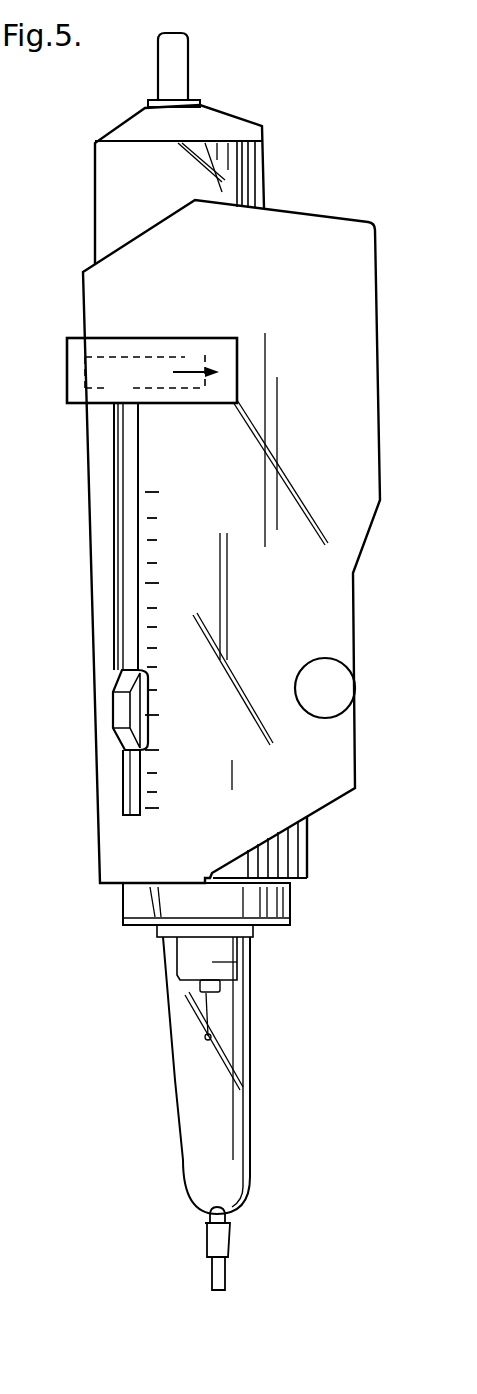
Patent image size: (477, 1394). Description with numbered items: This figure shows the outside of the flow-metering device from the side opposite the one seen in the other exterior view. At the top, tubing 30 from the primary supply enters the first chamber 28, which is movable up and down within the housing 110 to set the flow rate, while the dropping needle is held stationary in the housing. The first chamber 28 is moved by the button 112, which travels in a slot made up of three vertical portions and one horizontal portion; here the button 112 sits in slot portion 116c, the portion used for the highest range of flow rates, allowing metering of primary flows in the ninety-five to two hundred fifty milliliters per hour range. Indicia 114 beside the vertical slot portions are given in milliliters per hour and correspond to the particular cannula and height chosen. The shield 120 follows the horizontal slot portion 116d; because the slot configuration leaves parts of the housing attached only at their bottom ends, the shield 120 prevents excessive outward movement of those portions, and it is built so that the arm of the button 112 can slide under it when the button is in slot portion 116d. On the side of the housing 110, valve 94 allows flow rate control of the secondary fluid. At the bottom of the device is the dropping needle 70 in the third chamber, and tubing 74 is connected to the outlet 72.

The tubing 30 is at (180, 82).
The first chamber 28 is at (97, 210).
The housing 110 is at (92, 557).
The shield 120 is at (66, 375).
The horizontal slot portion 116d is at (185, 357).
The vertical slot portion 116c is at (125, 787).
The button 112 is at (113, 718).
The indicia 114 is at (150, 538).
The valve 94 is at (340, 697).
The dropping needle 70 is at (212, 1015).
The outlet 72 is at (208, 1215).
The tubing 74 is at (215, 1253).